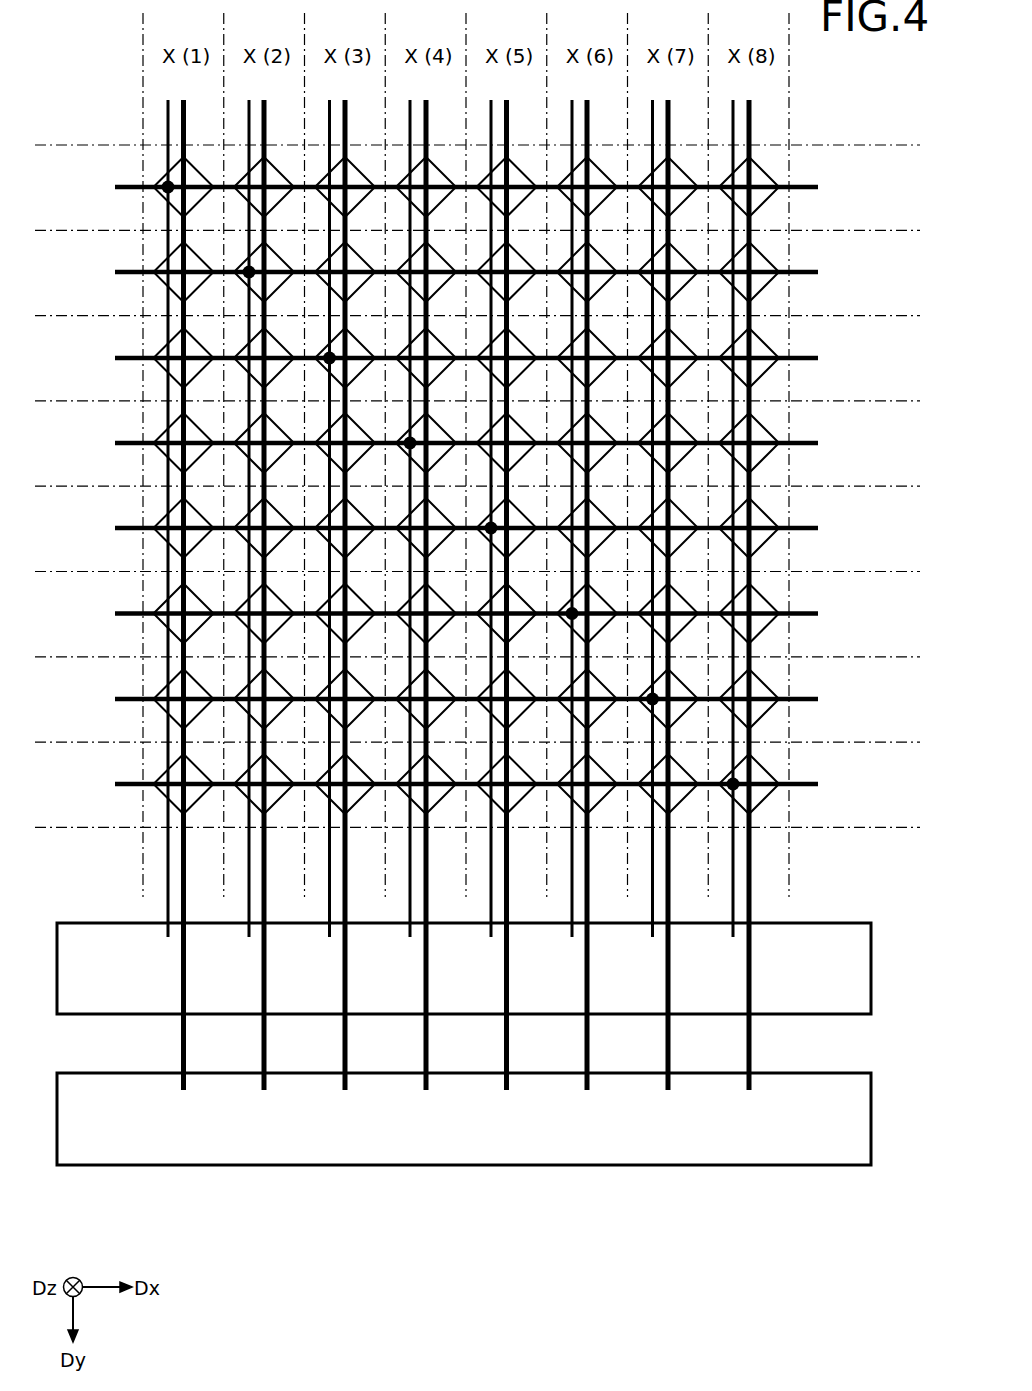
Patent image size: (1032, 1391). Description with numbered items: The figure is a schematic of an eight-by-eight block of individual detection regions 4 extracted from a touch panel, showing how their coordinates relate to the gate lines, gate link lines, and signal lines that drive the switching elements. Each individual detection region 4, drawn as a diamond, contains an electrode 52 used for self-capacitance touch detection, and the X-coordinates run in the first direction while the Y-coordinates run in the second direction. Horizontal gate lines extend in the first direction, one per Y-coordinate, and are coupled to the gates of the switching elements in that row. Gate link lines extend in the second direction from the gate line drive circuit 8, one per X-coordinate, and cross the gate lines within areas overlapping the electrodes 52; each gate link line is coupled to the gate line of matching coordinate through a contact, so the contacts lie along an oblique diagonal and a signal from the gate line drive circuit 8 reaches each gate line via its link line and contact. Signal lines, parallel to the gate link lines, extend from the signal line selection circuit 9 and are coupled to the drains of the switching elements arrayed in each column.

The individual detection region 4 is at (770, 212).
The electrode 52 is at (763, 172).
The gate line drive circuit 8 is at (840, 924).
The signal line selection circuit 9 is at (840, 1074).